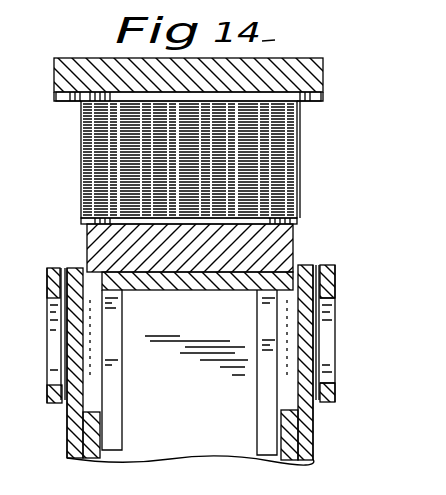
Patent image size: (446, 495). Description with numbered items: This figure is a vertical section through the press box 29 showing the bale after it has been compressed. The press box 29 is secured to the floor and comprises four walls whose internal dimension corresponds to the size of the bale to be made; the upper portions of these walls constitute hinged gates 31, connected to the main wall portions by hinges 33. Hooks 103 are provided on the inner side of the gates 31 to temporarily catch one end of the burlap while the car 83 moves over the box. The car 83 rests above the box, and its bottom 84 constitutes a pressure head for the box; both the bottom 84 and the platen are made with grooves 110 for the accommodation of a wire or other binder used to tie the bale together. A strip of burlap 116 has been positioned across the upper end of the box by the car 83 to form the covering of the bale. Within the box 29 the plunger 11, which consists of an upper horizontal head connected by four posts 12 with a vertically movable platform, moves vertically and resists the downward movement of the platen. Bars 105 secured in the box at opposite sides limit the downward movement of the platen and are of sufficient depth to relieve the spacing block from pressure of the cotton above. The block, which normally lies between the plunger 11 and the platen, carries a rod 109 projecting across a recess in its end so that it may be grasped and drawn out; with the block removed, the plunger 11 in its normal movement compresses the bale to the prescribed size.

The car 83 is at (65, 58).
The bottom of car 84 is at (72, 78).
The grooves 110 is at (303, 100).
The strip of burlap 116 is at (297, 157).
The rod 109 is at (272, 242).
The plunger 11 is at (190, 292).
The posts 12 is at (113, 394).
The press box 29 is at (305, 385).
The hinges 33 is at (65, 268).
The hinged gates 31 is at (56, 328).
The hooks 103 is at (314, 353).
The bars 105 is at (92, 428).